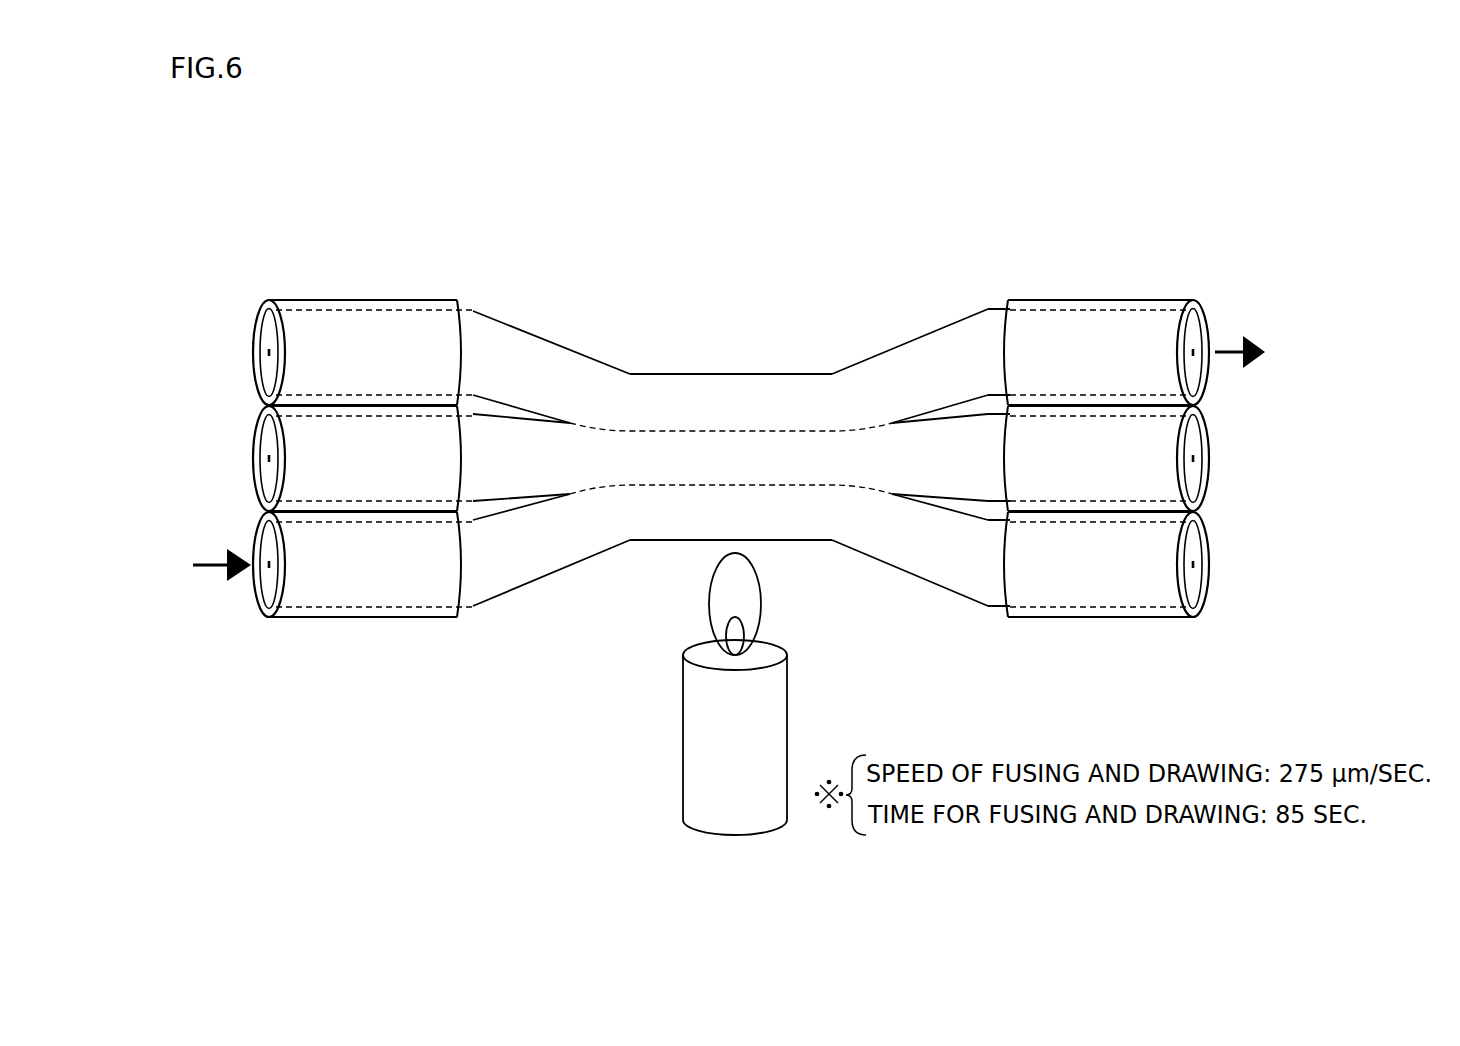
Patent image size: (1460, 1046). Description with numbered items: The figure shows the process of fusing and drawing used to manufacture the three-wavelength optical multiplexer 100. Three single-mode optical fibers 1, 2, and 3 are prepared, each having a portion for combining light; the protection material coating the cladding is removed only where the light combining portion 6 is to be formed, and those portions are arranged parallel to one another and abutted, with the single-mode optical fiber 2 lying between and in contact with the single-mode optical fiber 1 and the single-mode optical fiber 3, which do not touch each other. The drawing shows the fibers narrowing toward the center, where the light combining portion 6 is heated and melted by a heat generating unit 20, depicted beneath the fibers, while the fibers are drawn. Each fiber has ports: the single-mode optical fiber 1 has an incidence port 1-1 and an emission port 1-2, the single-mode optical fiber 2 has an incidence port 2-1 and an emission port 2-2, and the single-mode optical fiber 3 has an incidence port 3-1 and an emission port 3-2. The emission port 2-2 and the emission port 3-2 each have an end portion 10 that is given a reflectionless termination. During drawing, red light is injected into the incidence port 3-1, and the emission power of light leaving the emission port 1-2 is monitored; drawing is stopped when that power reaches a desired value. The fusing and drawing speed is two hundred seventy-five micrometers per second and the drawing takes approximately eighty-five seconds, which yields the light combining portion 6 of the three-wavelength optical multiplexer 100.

The three-wavelength optical multiplexer 100 is at (914, 127).
The single-mode optical fiber 1 is at (301, 308).
The single-mode optical fiber 2 is at (338, 418).
The single-mode optical fiber 3 is at (334, 612).
The incidence port 1-1 is at (253, 303).
The incidence port 2-1 is at (251, 433).
The incidence port 3-1 is at (252, 598).
The emission port 1-2 is at (1232, 302).
The emission port 2-2 is at (1230, 490).
The emission port 3-2 is at (1230, 590).
The light combining portion 6 is at (757, 350).
The end portion 10 is at (1198, 437).
The heat generating unit 20 is at (713, 738).